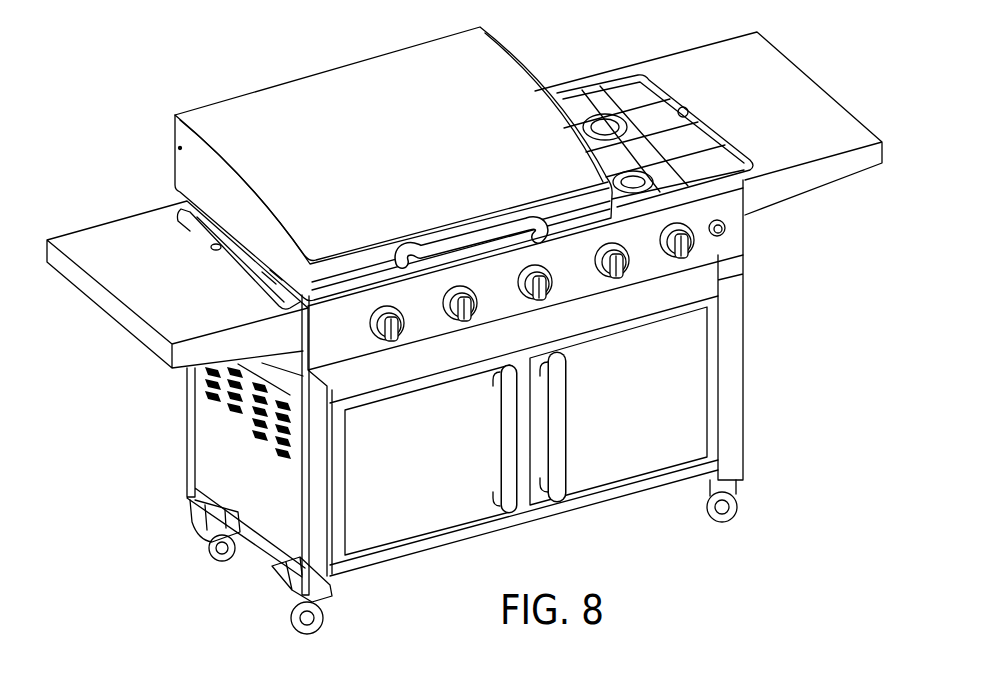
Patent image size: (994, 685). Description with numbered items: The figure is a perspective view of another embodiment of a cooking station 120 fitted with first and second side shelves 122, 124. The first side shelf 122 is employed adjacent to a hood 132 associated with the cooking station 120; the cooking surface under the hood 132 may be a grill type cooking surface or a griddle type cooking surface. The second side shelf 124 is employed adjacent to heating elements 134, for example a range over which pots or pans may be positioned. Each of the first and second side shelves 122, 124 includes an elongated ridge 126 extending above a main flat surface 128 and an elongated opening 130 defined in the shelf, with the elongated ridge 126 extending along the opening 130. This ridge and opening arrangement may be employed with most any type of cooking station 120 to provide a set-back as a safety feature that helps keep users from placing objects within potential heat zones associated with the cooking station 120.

The cooking station 120 is at (554, 407).
The first side shelf 122 is at (66, 234).
The second side shelf 124 is at (785, 48).
The elongated ridge 126 is at (742, 160).
The main flat surface 128 is at (697, 78).
The elongated opening 130 is at (690, 111).
The hood 132 is at (383, 82).
The heating elements 134 is at (690, 205).